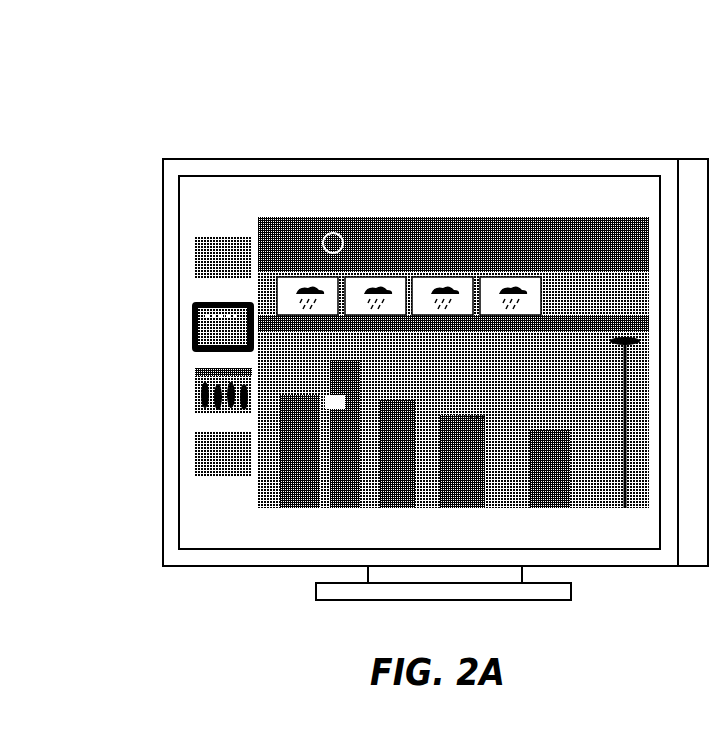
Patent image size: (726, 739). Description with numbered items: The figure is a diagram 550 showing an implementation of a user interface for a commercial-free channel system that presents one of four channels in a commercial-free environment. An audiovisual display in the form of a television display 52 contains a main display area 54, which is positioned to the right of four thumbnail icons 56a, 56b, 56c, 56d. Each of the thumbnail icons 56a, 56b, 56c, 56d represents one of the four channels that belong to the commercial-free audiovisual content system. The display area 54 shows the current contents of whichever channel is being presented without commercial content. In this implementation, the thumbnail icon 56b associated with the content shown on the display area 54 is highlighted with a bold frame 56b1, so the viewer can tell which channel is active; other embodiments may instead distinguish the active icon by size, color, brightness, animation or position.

The diagram 550 is at (604, 82).
The television display 52 is at (612, 159).
The main display area 54 is at (610, 549).
The thumbnail icon 56a is at (197, 257).
The thumbnail icon 56b is at (195, 320).
The bold frame 56b1 is at (197, 337).
The thumbnail icon 56c is at (196, 388).
The thumbnail icon 56d is at (196, 450).